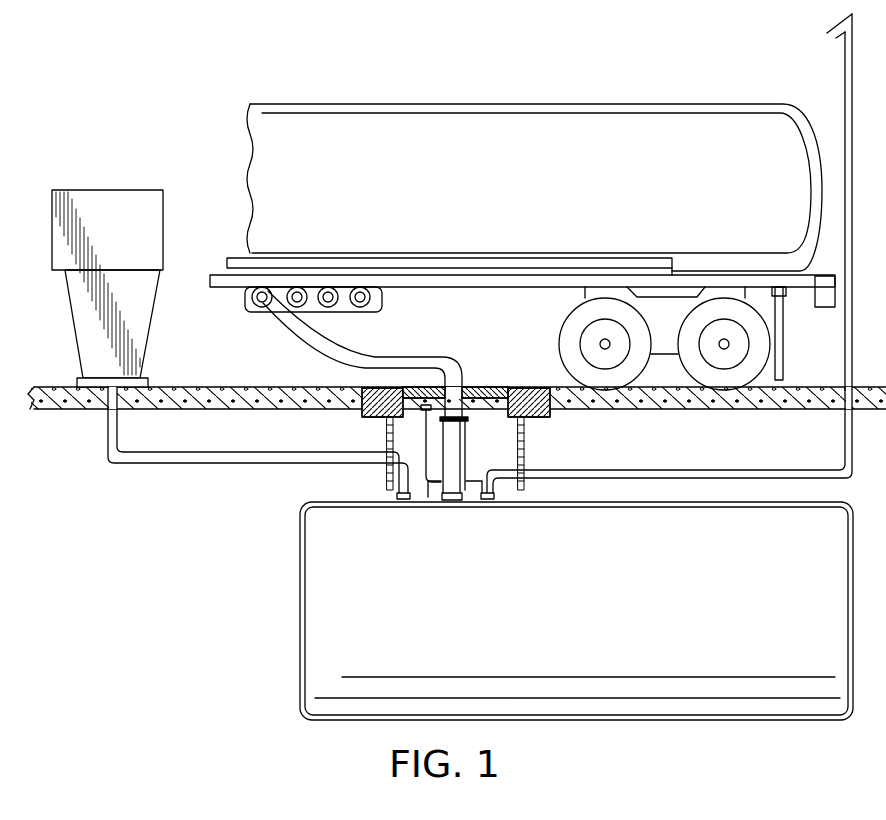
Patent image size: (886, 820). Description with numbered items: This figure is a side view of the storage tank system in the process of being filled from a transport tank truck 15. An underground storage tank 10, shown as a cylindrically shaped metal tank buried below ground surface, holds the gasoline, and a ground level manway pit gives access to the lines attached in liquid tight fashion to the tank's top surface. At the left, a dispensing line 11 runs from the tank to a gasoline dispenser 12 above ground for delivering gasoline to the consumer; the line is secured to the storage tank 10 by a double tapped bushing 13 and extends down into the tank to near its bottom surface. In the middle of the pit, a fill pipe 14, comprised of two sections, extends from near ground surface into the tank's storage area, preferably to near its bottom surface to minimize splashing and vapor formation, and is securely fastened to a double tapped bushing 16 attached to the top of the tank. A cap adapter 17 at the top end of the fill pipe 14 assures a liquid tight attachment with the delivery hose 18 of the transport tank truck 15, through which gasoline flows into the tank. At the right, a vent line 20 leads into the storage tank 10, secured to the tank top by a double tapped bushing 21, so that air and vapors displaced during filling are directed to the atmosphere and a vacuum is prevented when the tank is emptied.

The underground storage tank 10 is at (561, 612).
The dispensing line 11 is at (197, 463).
The gasoline dispenser 12 is at (137, 334).
The double tapped bushing 13 is at (402, 509).
The fill pipe 14 is at (465, 455).
The transport tank truck 15 is at (541, 187).
The double tapped bushing 16 is at (452, 501).
The cap adapter 17 is at (466, 420).
The delivery hose 18 is at (455, 365).
The vent line 20 is at (682, 470).
The double tapped bushing 21 is at (488, 503).